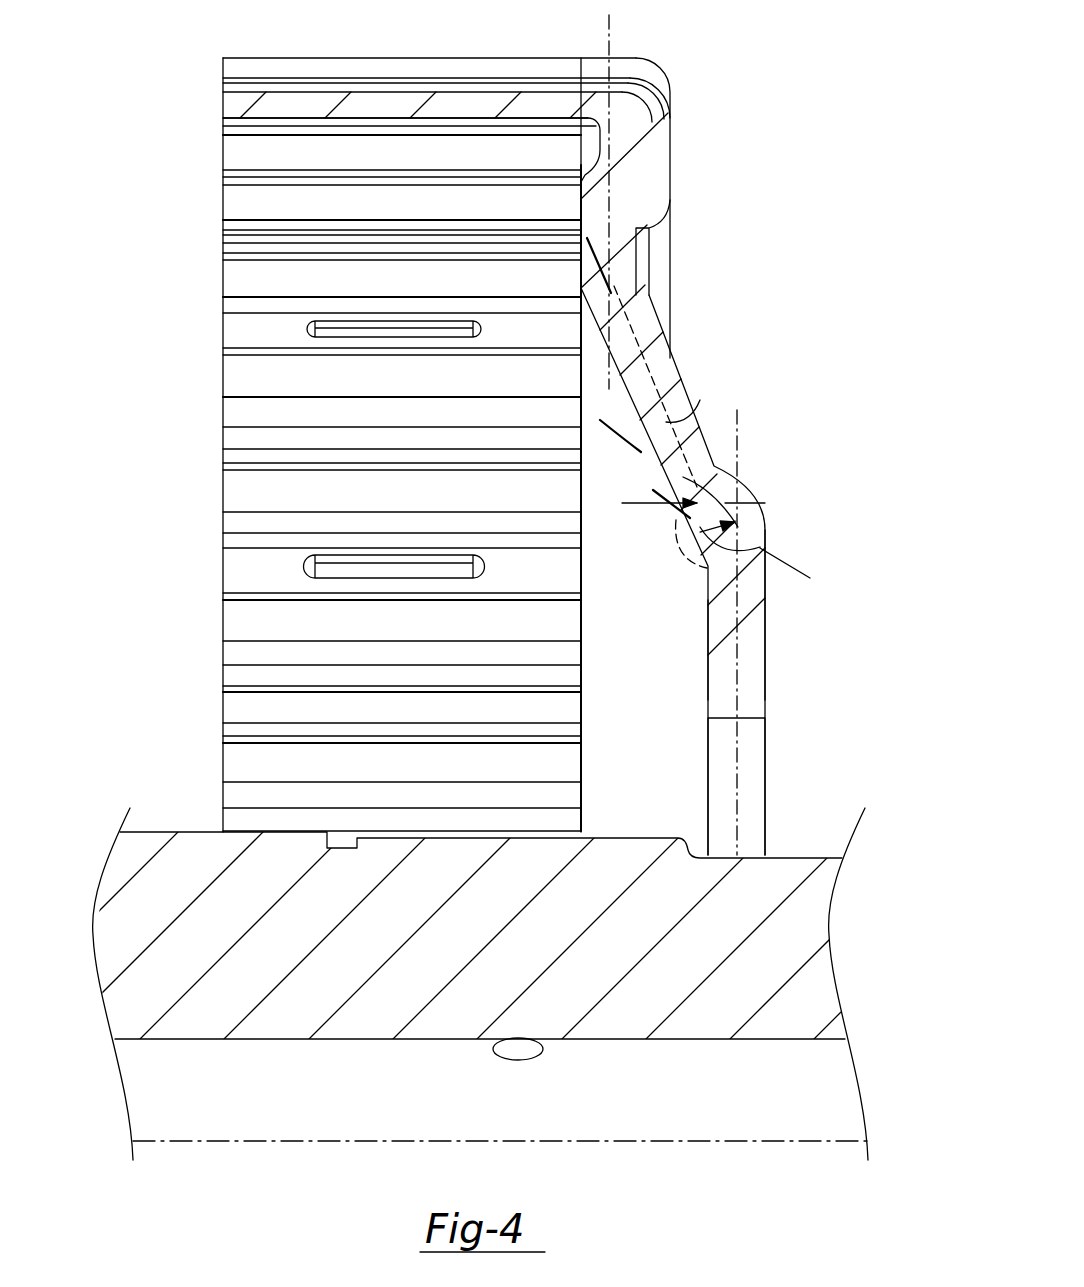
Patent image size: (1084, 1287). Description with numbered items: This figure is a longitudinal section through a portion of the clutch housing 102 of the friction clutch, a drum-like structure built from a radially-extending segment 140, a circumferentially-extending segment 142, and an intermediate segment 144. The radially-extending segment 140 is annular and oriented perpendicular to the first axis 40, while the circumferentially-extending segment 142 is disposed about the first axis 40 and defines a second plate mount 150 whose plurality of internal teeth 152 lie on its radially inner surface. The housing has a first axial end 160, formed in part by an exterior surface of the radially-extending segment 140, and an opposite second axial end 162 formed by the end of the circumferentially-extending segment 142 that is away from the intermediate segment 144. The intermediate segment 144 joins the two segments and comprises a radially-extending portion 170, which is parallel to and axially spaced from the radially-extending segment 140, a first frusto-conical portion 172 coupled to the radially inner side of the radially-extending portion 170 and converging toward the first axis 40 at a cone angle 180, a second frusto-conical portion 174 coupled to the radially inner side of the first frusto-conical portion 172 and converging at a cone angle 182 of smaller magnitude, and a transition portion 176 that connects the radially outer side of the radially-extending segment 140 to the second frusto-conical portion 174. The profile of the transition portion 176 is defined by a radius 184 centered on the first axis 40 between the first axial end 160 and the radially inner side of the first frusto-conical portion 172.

The first axis 40 is at (675, 1142).
The clutch housing 102 is at (803, 505).
The radially-extending segment 140 is at (738, 640).
The circumferentially-extending segment 142 is at (385, 100).
The intermediate segment 144 is at (812, 390).
The second plate mount 150 is at (255, 272).
The internal teeth 152 is at (353, 217).
The first axial end 160 is at (770, 683).
The second axial end 162 is at (225, 105).
The radially-extending portion 170 is at (612, 187).
The first frusto-conical portion 172 is at (700, 400).
The second frusto-conical portion 174 is at (673, 511).
The transition portion 176 is at (760, 505).
The cone angle 180 is at (582, 283).
The cone angle 182 is at (587, 447).
The radius 184 is at (745, 552).